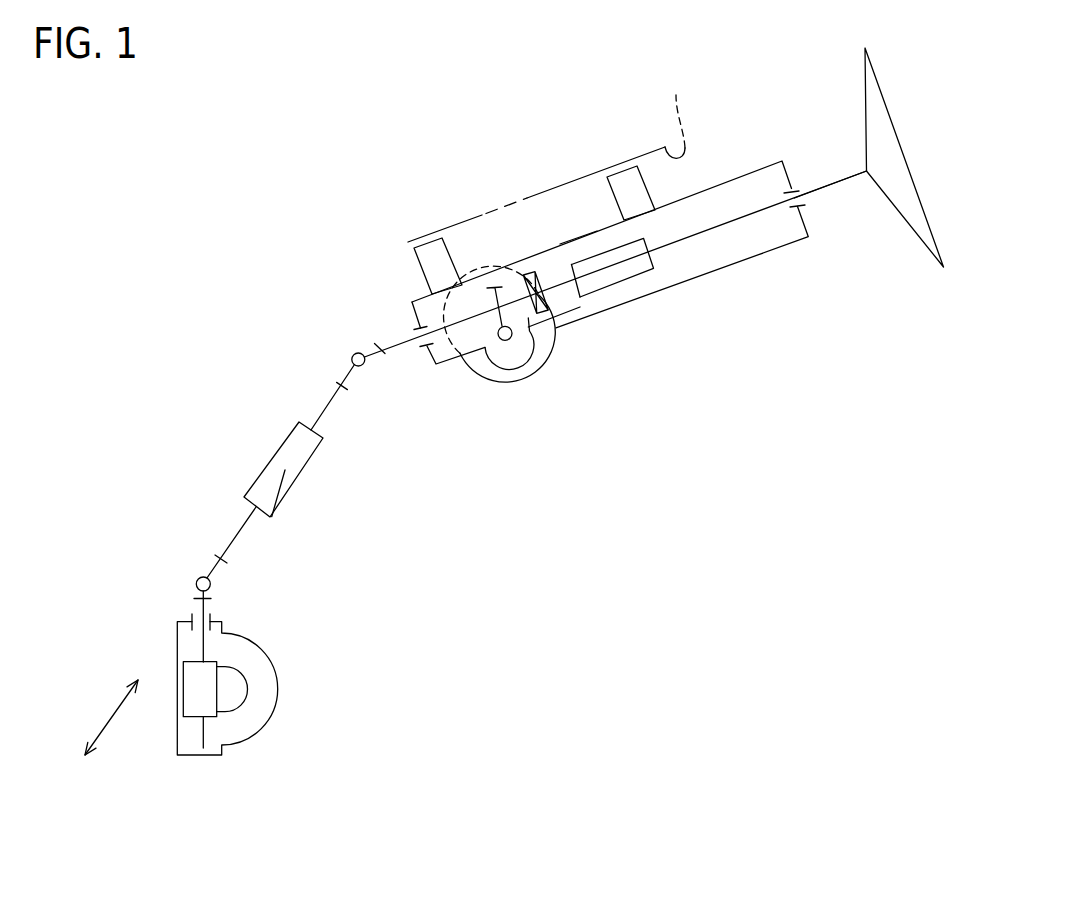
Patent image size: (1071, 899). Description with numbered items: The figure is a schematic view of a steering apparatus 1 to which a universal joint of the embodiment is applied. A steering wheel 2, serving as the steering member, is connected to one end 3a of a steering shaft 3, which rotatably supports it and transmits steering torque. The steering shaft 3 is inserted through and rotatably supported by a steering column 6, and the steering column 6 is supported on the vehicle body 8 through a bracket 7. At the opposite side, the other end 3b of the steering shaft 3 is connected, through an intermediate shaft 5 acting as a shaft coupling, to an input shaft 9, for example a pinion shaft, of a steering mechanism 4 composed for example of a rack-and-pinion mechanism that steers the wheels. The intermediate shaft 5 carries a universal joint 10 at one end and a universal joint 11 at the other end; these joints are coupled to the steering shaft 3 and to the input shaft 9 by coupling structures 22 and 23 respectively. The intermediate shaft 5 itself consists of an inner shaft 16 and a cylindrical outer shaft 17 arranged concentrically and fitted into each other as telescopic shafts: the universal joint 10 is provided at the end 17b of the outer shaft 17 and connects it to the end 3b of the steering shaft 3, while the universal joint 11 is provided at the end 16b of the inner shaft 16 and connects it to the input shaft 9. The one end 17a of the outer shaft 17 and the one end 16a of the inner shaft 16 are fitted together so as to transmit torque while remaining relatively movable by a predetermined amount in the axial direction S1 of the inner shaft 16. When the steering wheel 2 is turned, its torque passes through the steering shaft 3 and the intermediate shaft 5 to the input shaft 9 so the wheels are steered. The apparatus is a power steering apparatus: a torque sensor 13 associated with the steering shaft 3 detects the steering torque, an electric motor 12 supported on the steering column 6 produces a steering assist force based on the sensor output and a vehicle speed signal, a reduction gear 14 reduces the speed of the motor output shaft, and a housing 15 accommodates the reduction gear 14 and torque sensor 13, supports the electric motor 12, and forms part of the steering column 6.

The steering apparatus 1 is at (272, 257).
The steering wheel 2 is at (920, 242).
The steering shaft 3 is at (616, 309).
The one end of the steering shaft 3a is at (831, 233).
The other end of the steering shaft 3b is at (397, 347).
The steering mechanism 4 is at (280, 688).
The intermediate shaft 5 is at (428, 547).
The steering column 6 is at (747, 171).
The bracket 7 is at (447, 248).
The vehicle body 8 is at (674, 106).
The input shaft 9 is at (198, 600).
The universal joint 10 is at (356, 352).
The universal joint 11 is at (197, 580).
The electric motor 12 is at (507, 387).
The torque sensor 13 is at (550, 298).
The reduction gear 14 is at (452, 313).
The housing 15 is at (487, 267).
The inner shaft 16 is at (218, 516).
The one end of the inner shaft 16a is at (272, 486).
The end of the inner shaft 16b is at (236, 553).
The outer shaft 17 is at (304, 424).
The one end of the outer shaft 17a is at (259, 478).
The end of the outer shaft 17b is at (333, 392).
The coupling structure 22 is at (385, 372).
The coupling structure 23 is at (226, 598).
The axial direction S1 is at (110, 722).